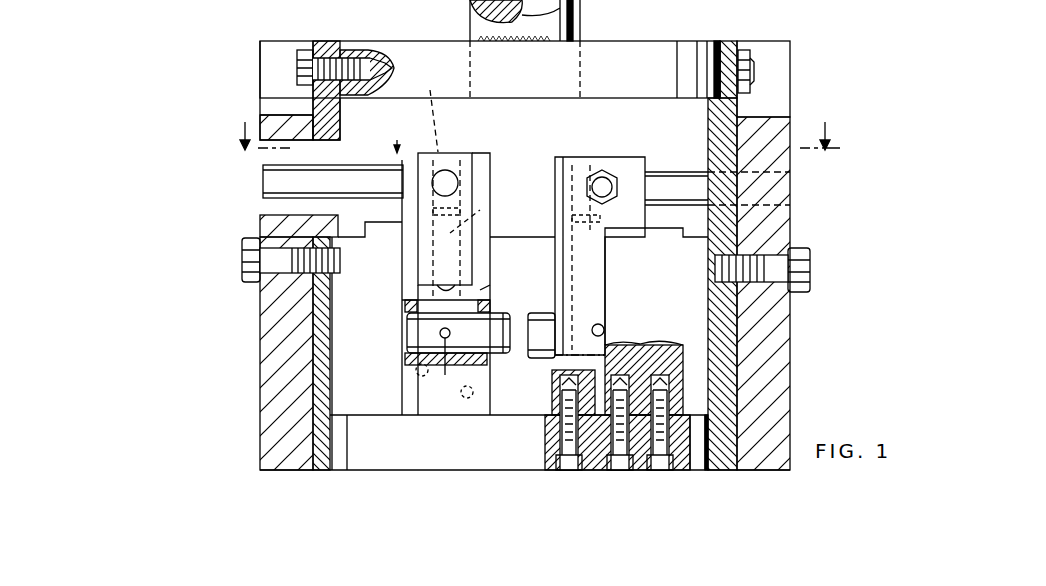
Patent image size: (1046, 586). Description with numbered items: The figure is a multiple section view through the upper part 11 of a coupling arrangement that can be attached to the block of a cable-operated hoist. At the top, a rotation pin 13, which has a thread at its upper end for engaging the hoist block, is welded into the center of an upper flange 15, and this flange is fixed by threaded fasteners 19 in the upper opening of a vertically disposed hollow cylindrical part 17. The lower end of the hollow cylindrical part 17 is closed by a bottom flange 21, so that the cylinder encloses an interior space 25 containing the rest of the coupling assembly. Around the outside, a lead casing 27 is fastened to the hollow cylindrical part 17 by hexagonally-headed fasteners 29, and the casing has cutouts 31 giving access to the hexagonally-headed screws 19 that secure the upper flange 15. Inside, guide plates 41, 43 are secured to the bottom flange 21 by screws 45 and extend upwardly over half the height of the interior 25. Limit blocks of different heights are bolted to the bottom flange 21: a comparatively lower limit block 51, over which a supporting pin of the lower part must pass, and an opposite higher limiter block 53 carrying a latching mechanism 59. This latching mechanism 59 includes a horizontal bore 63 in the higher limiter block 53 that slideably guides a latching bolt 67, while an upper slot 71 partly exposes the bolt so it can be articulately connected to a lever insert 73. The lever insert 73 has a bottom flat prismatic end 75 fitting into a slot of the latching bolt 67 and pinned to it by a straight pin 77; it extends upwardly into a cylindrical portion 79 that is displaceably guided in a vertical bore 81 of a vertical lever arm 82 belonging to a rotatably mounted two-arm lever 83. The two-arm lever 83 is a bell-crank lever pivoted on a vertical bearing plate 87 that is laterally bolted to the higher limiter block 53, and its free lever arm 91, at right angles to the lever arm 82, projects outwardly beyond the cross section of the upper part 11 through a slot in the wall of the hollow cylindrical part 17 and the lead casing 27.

The upper part 11 is at (548, 136).
The rotation pin 13 is at (567, 27).
The upper flange 15 is at (700, 55).
The hollow cylindrical part 17 is at (728, 93).
The threaded fasteners 19 is at (345, 57).
The bottom flange 21 is at (703, 460).
The interior space 25 is at (678, 143).
The lead casing 27 is at (265, 343).
The hexagonally-headed fasteners 29 is at (243, 265).
The cutouts 31 is at (272, 75).
The guide plate 41 is at (378, 333).
The guide plate 43 is at (665, 320).
The screws 45 is at (633, 470).
The lower limit block 51 is at (560, 405).
The higher limiter block 53 is at (418, 420).
The latching mechanism 59 is at (487, 144).
The horizontal bore 63 is at (405, 320).
The latching bolt 67 is at (415, 340).
The upper slot 71 is at (485, 290).
The lever insert 73 is at (436, 255).
The flat prismatic end 75 is at (440, 296).
The straight pin 77 is at (444, 364).
The cylindrical portion 79 is at (484, 220).
The vertical bore 81 is at (436, 108).
The vertical lever arm 82 is at (466, 205).
The two-arm lever 83 is at (397, 140).
The vertical bearing plate 87 is at (412, 208).
The free lever arm 91 is at (275, 178).